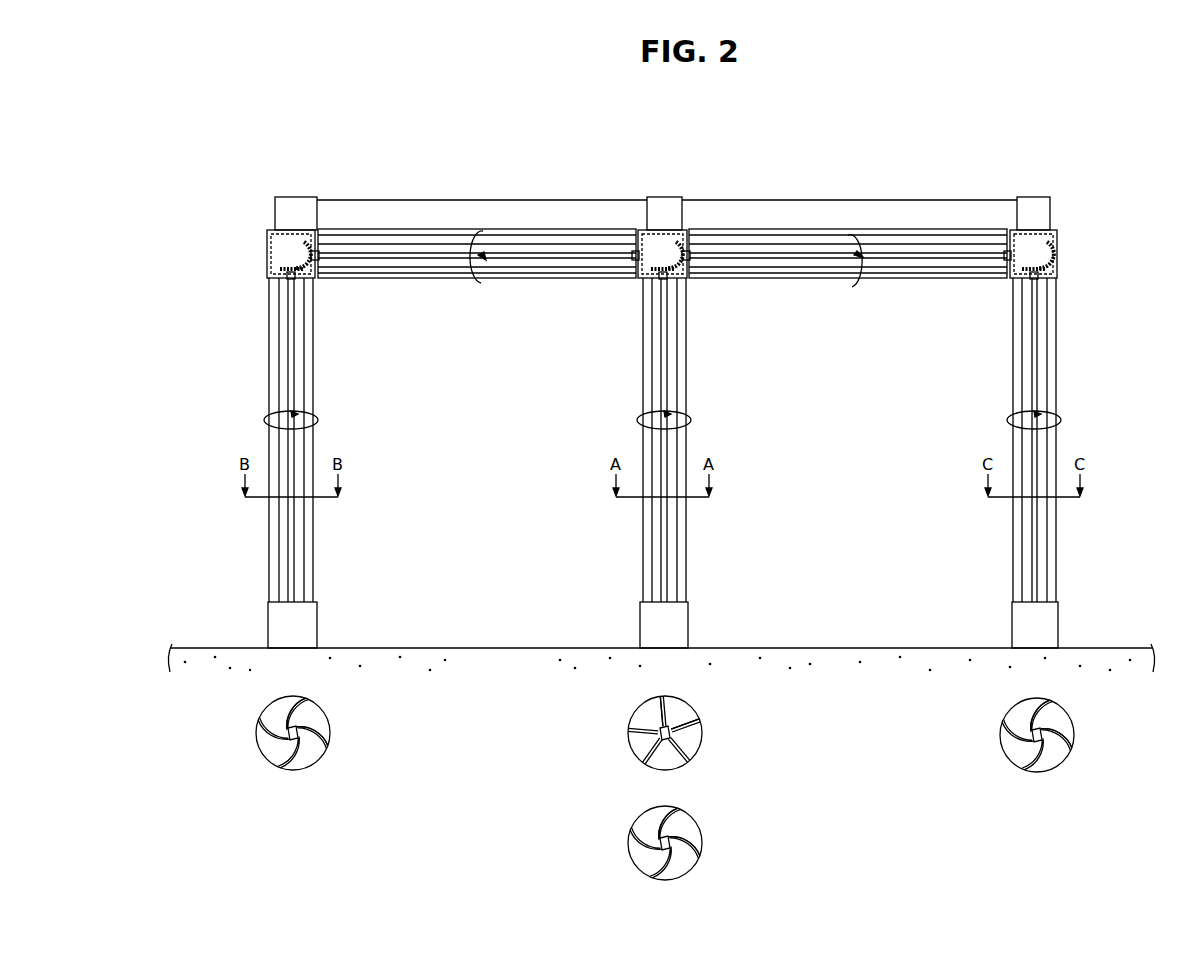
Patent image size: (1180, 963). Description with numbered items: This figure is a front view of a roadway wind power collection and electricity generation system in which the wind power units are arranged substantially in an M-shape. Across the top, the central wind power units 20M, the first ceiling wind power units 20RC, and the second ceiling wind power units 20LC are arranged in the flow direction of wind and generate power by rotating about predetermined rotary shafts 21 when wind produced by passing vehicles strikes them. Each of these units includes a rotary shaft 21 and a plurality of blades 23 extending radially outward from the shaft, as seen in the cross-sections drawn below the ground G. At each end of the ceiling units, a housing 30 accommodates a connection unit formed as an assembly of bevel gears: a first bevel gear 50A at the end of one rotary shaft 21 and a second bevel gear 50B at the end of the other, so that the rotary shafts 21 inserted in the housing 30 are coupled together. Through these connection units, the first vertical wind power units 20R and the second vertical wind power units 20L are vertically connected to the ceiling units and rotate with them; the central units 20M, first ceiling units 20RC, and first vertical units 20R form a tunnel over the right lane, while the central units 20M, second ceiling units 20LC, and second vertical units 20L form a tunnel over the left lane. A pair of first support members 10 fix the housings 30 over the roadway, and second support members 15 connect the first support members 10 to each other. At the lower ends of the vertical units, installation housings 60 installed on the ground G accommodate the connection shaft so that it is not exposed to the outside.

The first support member 10 is at (290, 210).
The second support member 15 is at (418, 212).
The second vertical wind power unit 20L is at (290, 340).
The central wind power unit 20M is at (672, 346).
The first vertical wind power unit 20R is at (1042, 348).
The second ceiling wind power unit 20LC is at (530, 248).
The first ceiling wind power unit 20RC is at (940, 248).
The rotary shaft 21 is at (312, 722).
The blade 23 is at (322, 735).
The housing 30 is at (318, 212).
The first bevel gear 50A is at (1048, 254).
The second bevel gear 50B is at (1050, 267).
The installation housing 60 is at (304, 614).
The ground G is at (494, 671).